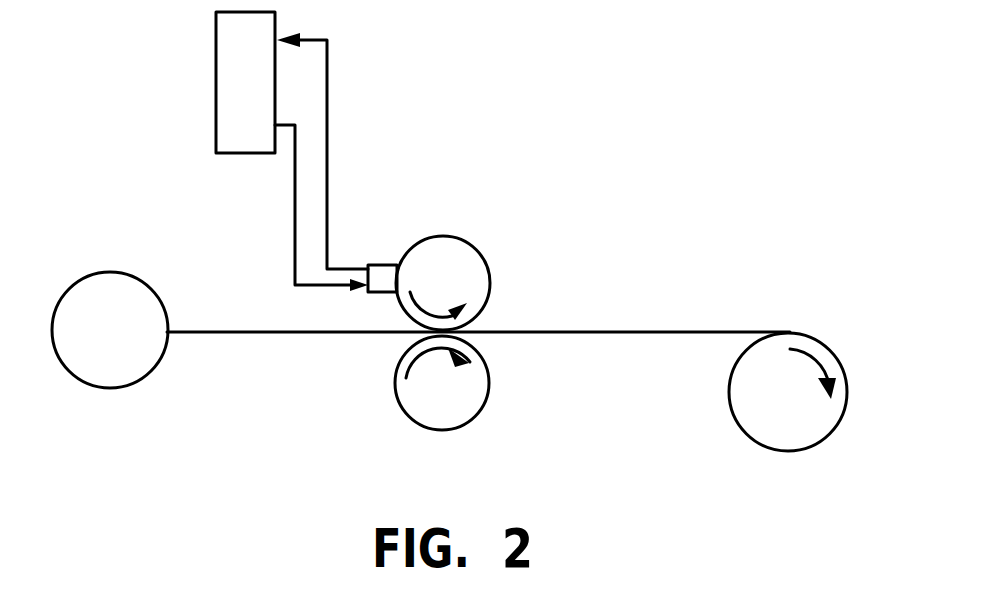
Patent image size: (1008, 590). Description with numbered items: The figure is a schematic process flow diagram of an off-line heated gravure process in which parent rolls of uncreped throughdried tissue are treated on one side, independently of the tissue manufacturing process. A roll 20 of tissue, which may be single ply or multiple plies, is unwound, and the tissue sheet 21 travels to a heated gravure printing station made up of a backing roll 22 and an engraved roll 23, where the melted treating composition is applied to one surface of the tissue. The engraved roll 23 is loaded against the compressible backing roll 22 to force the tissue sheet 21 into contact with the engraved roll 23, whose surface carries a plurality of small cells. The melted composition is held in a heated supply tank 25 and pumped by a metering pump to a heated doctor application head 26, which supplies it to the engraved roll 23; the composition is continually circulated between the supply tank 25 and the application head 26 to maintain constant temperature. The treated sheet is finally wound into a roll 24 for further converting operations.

The roll 20 is at (108, 270).
The tissue sheet 21 is at (249, 334).
The backing roll 22 is at (487, 395).
The engraved roll 23 is at (472, 242).
The roll 24 is at (843, 375).
The heated supply tank 25 is at (216, 58).
The heated doctor application head 26 is at (383, 265).